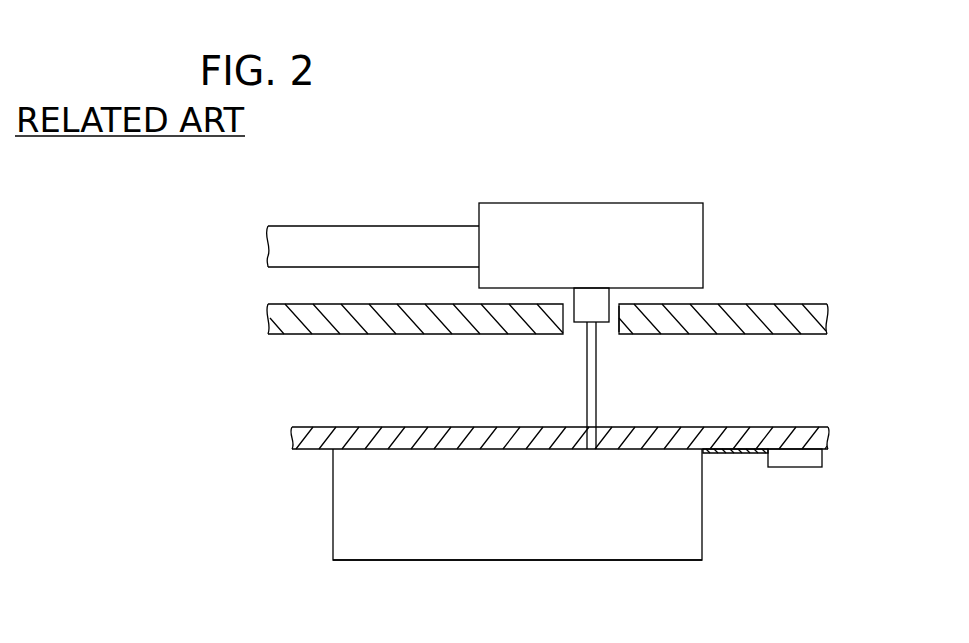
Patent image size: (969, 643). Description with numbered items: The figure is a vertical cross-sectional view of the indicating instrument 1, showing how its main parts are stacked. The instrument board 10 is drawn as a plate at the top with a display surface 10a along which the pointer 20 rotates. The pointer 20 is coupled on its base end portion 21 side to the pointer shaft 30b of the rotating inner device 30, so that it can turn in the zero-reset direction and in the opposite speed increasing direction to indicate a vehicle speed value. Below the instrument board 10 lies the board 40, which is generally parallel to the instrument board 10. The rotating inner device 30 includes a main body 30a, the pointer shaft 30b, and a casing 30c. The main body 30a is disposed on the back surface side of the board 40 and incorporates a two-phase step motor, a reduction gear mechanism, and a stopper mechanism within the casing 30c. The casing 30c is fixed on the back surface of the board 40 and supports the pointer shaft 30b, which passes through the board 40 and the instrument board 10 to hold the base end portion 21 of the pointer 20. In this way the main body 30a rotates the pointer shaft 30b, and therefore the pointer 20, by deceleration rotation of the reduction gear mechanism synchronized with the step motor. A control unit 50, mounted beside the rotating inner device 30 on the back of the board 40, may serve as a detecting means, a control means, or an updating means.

The indicating instrument 1 is at (298, 178).
The instrument board 10 is at (786, 303).
The display surface 10a is at (636, 303).
The pointer 20 is at (439, 224).
The base end portion 21 is at (621, 203).
The rotating inner device 30 is at (704, 505).
The main body of the inner device 30a is at (641, 562).
The pointer shaft 30b is at (597, 379).
The casing 30c is at (517, 561).
The board 40 is at (703, 425).
The control unit 50 is at (815, 468).